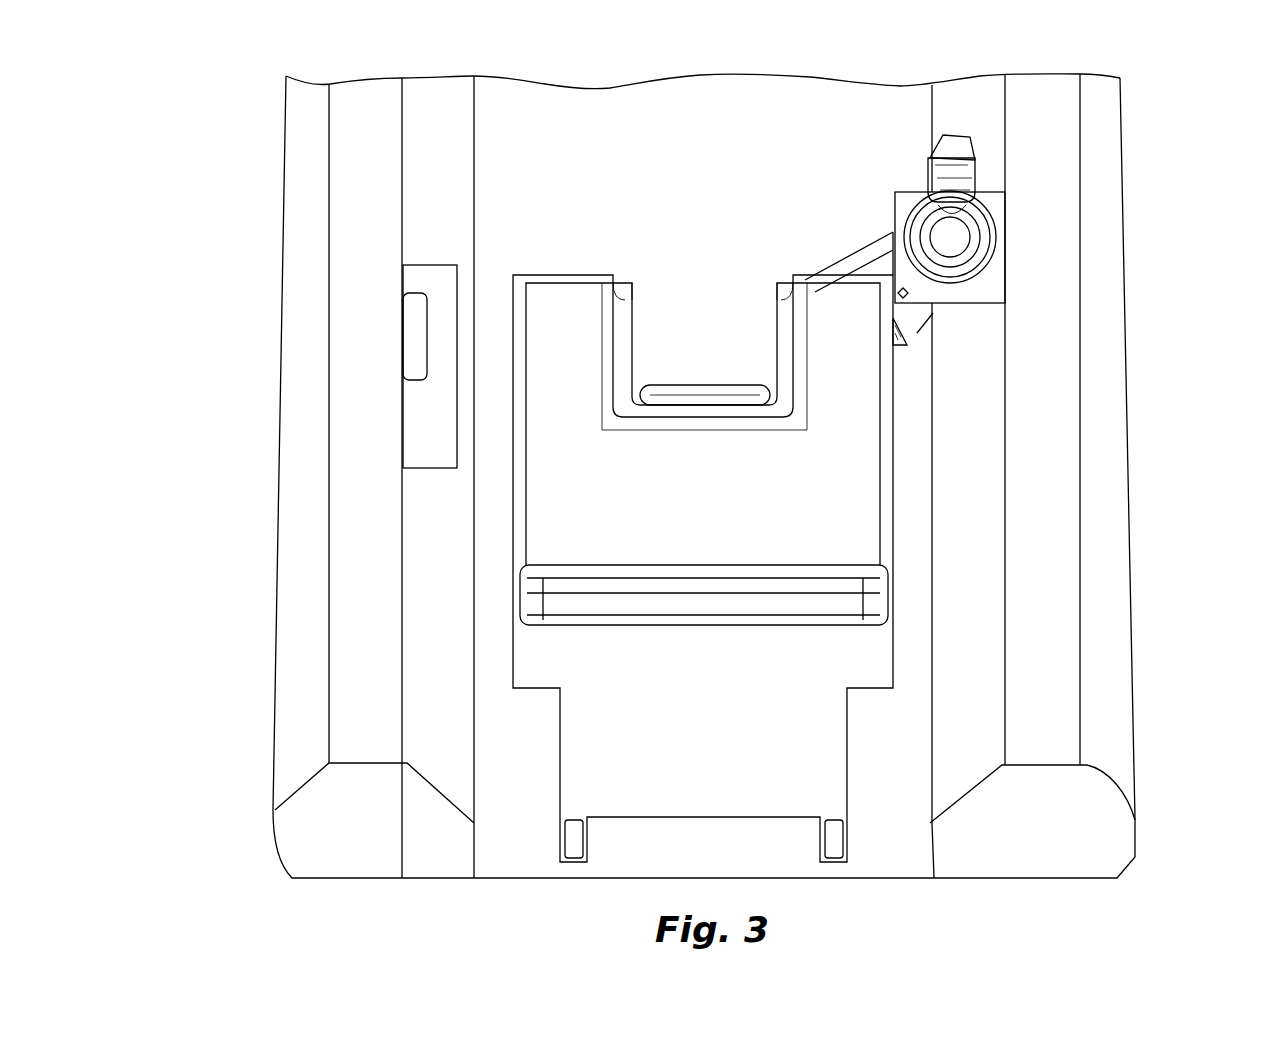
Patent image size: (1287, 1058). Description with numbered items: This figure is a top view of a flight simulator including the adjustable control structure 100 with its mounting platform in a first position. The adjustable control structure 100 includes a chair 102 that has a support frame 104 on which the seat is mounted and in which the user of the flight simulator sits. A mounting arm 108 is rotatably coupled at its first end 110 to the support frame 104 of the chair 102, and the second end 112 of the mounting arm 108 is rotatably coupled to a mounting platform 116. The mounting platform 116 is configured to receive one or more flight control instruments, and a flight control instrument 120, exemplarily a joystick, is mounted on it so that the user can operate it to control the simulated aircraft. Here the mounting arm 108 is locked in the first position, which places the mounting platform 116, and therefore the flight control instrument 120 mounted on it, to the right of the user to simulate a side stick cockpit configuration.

The adjustable control structure 100 is at (1150, 65).
The chair 102 is at (640, 760).
The support frame 104 is at (563, 475).
The mounting arm 108 is at (900, 327).
The first end 110 is at (785, 317).
The second end 112 is at (888, 235).
The mounting platform 116 is at (987, 285).
The flight control instrument 120 is at (962, 170).